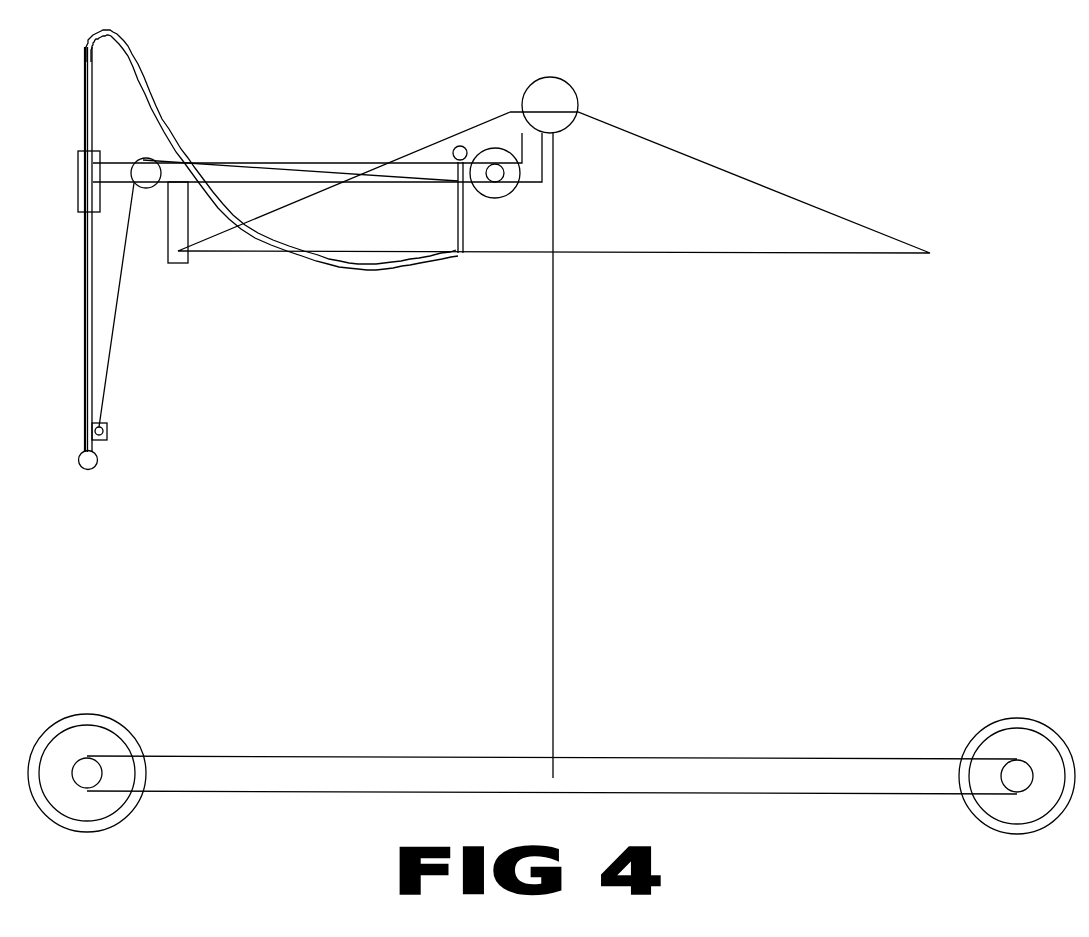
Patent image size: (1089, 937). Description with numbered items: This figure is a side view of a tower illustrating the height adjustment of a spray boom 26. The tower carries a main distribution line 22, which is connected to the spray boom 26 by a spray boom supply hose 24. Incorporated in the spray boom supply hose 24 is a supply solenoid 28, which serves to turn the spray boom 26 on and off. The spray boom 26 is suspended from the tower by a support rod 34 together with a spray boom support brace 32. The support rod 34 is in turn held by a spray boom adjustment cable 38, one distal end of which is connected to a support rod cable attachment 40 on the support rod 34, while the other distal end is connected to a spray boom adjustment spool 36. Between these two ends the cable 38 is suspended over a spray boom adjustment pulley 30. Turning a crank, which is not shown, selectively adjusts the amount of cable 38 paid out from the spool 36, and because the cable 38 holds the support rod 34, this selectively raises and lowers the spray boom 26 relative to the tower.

The main distribution line 22 is at (454, 151).
The spray boom supply hose 24 is at (163, 121).
The spray boom 26 is at (93, 466).
The supply solenoid 28 is at (464, 205).
The spray boom adjustment pulley 30 is at (146, 173).
The spray boom support brace 32 is at (78, 202).
The support rod 34 is at (85, 346).
The spray boom adjustment spool 36 is at (498, 152).
The spray boom adjustment cable 38 is at (113, 331).
The support rod cable attachment 40 is at (107, 432).